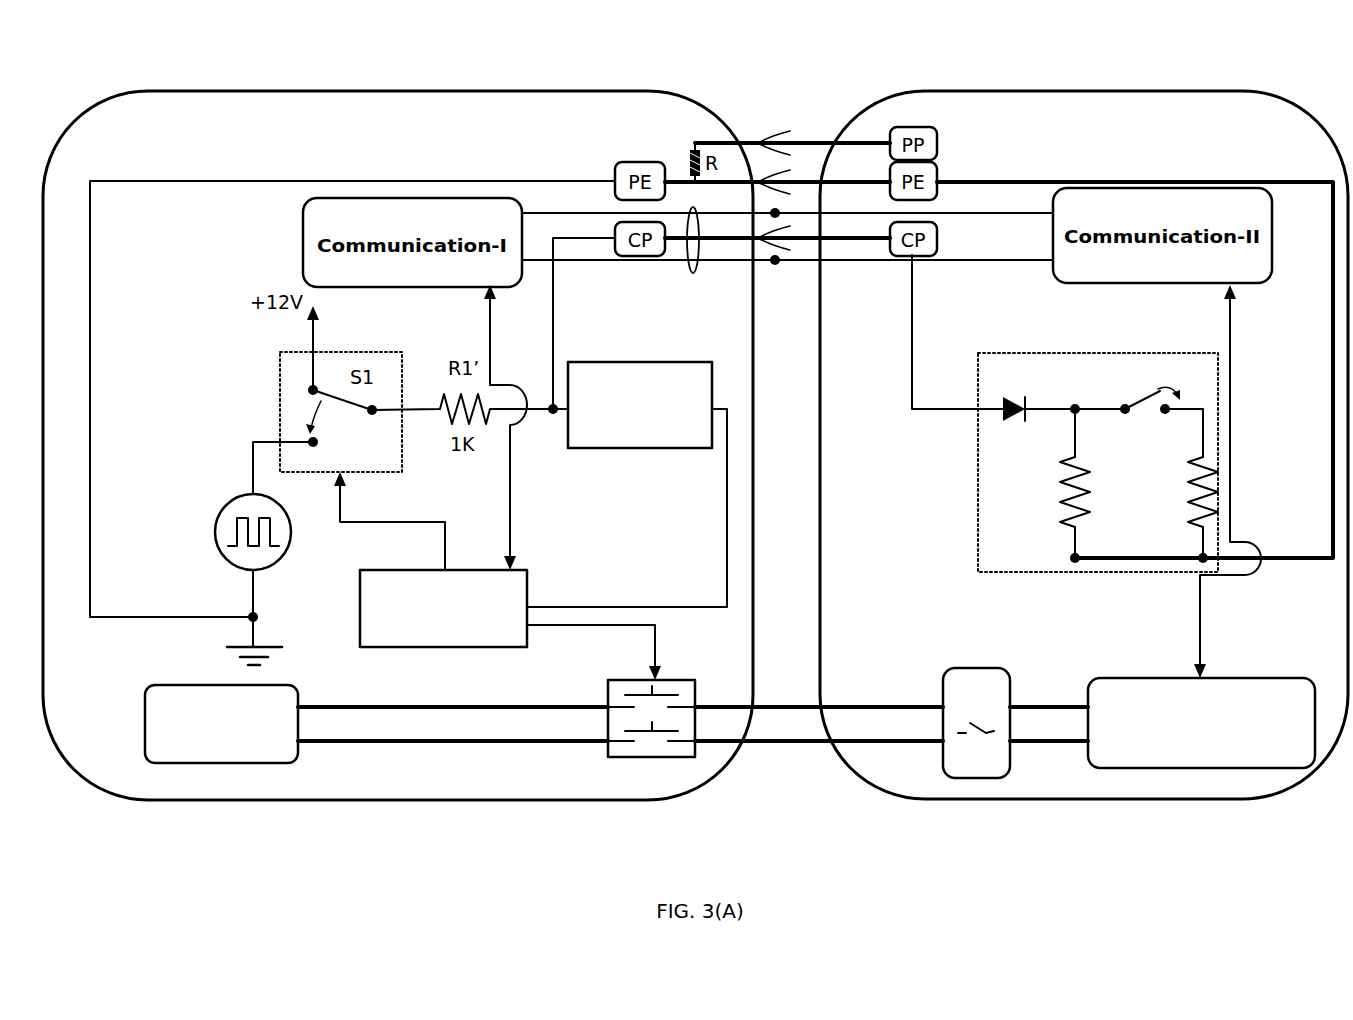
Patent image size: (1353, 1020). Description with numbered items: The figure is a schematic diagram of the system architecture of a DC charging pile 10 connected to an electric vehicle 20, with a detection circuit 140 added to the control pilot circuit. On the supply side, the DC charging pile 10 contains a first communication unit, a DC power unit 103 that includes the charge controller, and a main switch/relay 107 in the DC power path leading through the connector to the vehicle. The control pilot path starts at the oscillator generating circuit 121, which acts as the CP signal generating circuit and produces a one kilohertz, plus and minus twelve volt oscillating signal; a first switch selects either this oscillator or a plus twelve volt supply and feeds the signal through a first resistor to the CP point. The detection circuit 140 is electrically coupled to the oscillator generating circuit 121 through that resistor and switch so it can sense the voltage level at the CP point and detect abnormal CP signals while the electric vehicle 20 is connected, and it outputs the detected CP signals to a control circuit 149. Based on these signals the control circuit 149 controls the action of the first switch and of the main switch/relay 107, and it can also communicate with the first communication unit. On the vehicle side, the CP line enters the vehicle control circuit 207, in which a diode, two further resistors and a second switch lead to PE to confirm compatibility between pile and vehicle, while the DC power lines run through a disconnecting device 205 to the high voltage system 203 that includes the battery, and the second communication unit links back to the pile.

The DC charging pile 10 is at (402, 90).
The electric vehicle 20 is at (1082, 90).
The DC power unit 103 is at (145, 712).
The main switch/relay 107 is at (640, 761).
The oscillator generating circuit 121 is at (206, 535).
The detection circuit 140 is at (625, 362).
The control circuit 149 is at (448, 648).
The high voltage system 203 is at (1230, 676).
The disconnecting device 205 is at (975, 668).
The vehicle-side control pilot circuit 207 is at (975, 457).